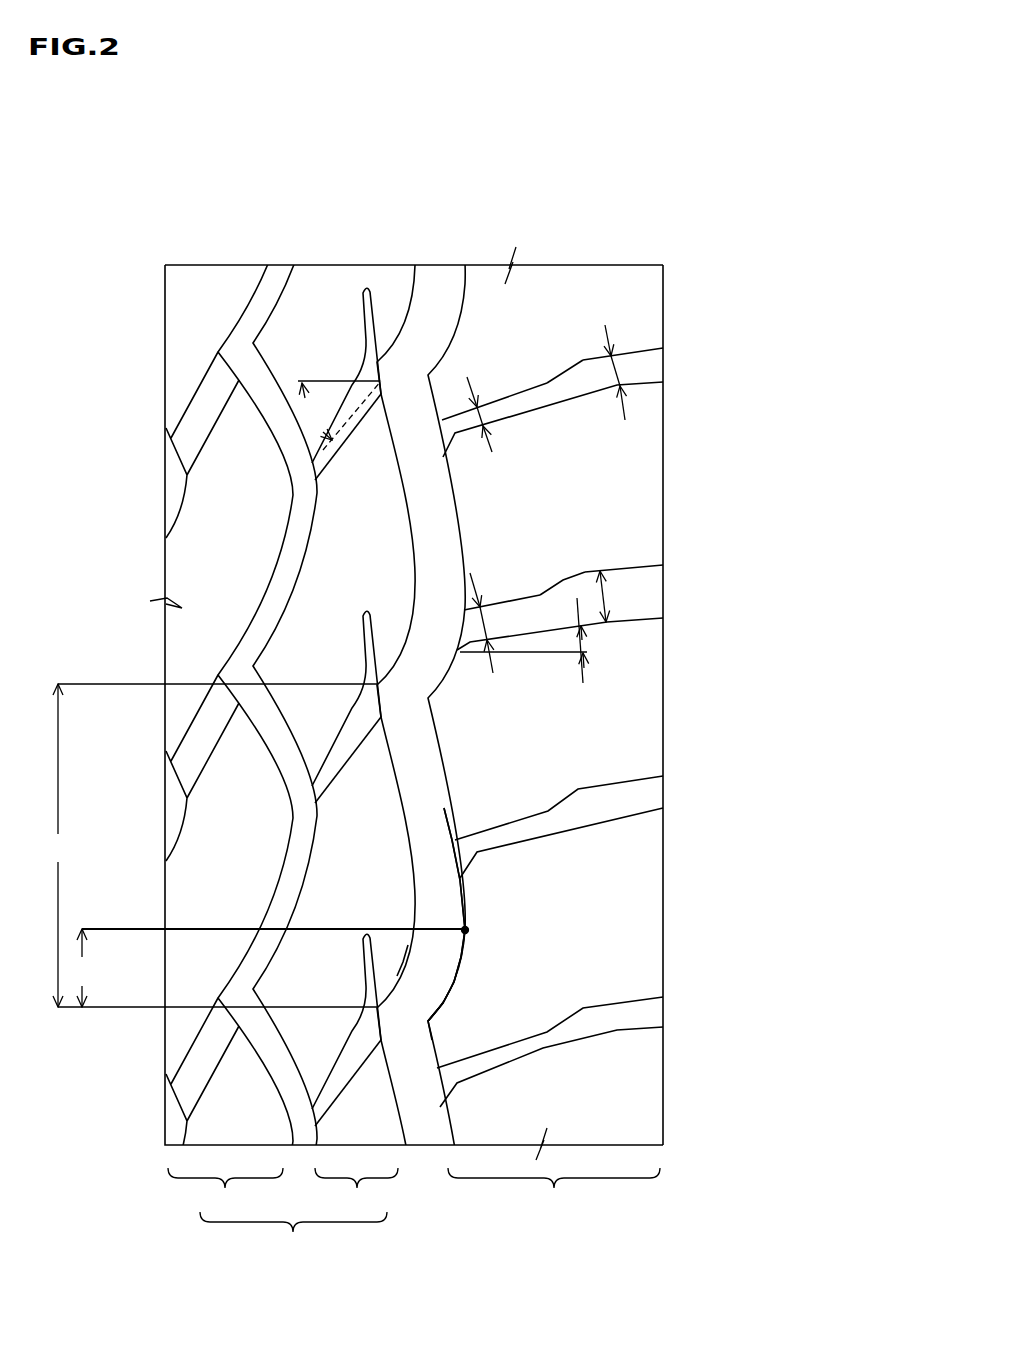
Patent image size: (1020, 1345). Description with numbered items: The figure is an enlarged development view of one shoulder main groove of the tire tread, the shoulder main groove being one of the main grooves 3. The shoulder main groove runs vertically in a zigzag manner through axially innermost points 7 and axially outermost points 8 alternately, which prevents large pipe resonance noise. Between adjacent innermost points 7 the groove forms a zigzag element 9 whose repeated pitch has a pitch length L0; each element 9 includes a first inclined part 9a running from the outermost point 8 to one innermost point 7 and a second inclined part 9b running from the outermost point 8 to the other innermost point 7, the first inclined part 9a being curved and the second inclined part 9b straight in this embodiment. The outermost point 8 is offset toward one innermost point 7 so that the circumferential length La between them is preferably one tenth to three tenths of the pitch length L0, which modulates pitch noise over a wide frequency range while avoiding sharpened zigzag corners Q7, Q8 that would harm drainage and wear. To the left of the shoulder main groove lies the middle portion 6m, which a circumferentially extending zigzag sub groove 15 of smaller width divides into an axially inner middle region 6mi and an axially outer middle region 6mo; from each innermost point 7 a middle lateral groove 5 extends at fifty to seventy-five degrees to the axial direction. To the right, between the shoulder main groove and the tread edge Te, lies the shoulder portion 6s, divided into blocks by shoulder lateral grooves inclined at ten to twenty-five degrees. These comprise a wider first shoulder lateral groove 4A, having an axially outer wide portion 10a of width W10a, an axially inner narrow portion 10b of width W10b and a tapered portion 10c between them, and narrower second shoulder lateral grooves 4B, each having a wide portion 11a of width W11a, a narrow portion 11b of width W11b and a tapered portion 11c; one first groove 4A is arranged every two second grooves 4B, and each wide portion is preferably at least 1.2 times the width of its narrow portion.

The main groove 3 is at (422, 1118).
The sub groove 15 is at (260, 307).
The middle lateral groove 5 is at (342, 445).
The innermost point 7 is at (376, 684).
The second shoulder lateral groove 4B is at (748, 262).
The narrow portion 11b is at (495, 399).
The tapered portion 11c is at (558, 374).
The wide portion 11a is at (635, 351).
The groove width of wide portion W11a is at (620, 378).
The groove width of narrow portion W11b is at (517, 414).
The first shoulder lateral groove 4A is at (748, 478).
The narrow portion 10b is at (512, 600).
The tapered portion 10c is at (560, 582).
The wide portion 10a is at (577, 568).
The groove width of wide portion W10a is at (603, 592).
The groove width of narrow portion W10b is at (481, 605).
The tread edge Te is at (664, 705).
The pitch length L0 is at (209, 845).
The circumferential length La is at (80, 968).
The outermost point 8 is at (478, 927).
The zigzag corner Q8 is at (400, 961).
The zigzag corner Q7 is at (434, 1023).
The zigzag element 9 is at (735, 853).
The first inclined part 9a is at (447, 1000).
The second inclined part 9b is at (450, 808).
The axially inner middle region 6mi is at (225, 1192).
The axially outer middle region 6mo is at (356, 1192).
The middle portion 6m is at (293, 1239).
The shoulder portion 6s is at (554, 1192).